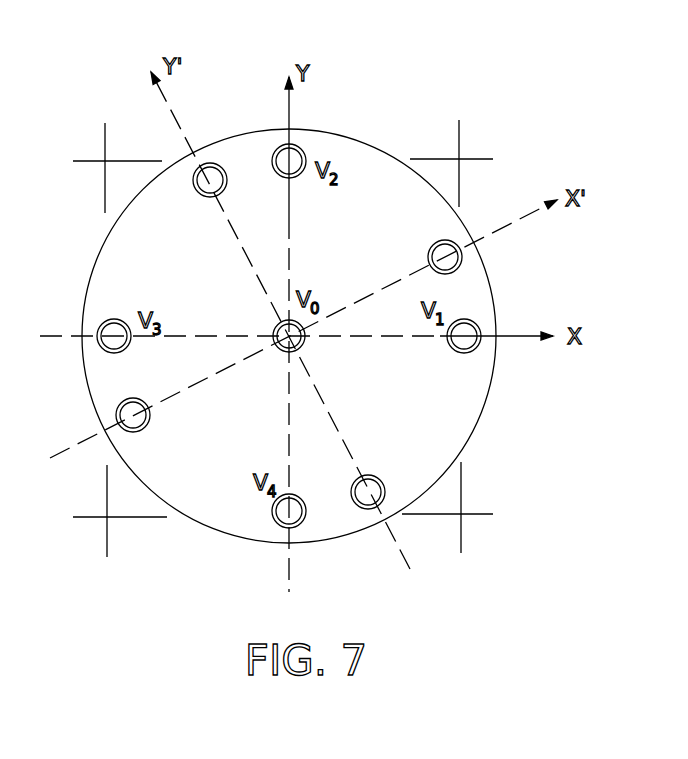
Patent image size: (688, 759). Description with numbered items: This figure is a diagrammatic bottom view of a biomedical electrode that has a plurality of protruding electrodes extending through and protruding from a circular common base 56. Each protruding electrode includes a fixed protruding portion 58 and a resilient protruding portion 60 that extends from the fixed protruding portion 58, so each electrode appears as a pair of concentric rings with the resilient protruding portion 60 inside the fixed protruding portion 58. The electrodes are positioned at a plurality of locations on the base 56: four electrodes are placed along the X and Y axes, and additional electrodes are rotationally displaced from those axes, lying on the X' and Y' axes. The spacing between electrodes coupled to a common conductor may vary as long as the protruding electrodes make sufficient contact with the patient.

The common base 56 is at (369, 141).
The fixed protruding portion 58 is at (273, 166).
The resilient protruding portion 60 is at (206, 194).